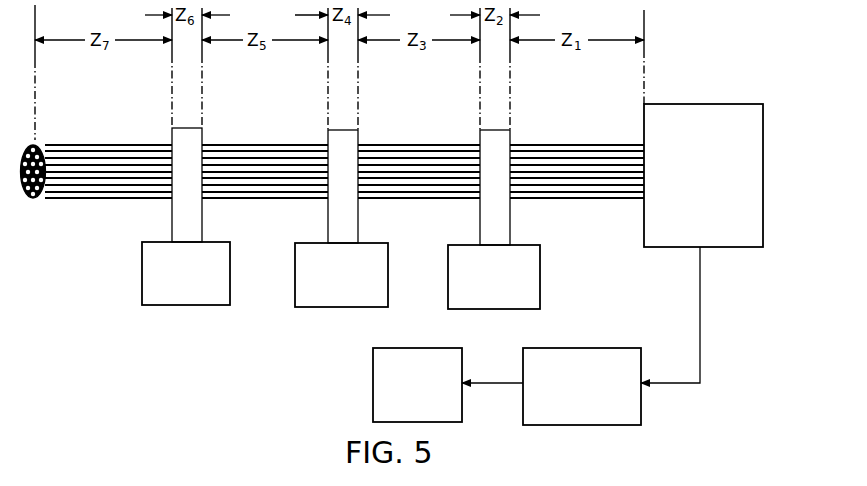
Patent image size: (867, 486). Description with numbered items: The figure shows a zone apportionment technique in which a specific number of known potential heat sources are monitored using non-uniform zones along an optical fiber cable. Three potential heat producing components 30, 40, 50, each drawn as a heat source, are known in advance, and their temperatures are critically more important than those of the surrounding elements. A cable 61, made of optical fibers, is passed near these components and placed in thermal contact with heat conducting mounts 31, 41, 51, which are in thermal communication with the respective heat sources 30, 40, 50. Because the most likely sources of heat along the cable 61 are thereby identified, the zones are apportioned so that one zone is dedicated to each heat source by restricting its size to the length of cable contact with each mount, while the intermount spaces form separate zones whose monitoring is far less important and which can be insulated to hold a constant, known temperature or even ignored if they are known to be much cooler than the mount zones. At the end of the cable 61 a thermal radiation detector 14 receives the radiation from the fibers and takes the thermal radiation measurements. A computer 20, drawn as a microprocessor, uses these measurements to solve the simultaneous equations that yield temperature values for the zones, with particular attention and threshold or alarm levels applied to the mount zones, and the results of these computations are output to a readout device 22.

The detector 14 is at (721, 103).
The computer 20 is at (556, 348).
The readout device 22 is at (408, 348).
The potential heat producing component 30 is at (540, 255).
The heat conducting mount 31 is at (509, 219).
The potential heat producing component 40 is at (388, 254).
The heat conducting mount 41 is at (357, 219).
The potential heat producing component 50 is at (230, 254).
The heat conducting mount 51 is at (201, 219).
The cable 61 is at (93, 197).